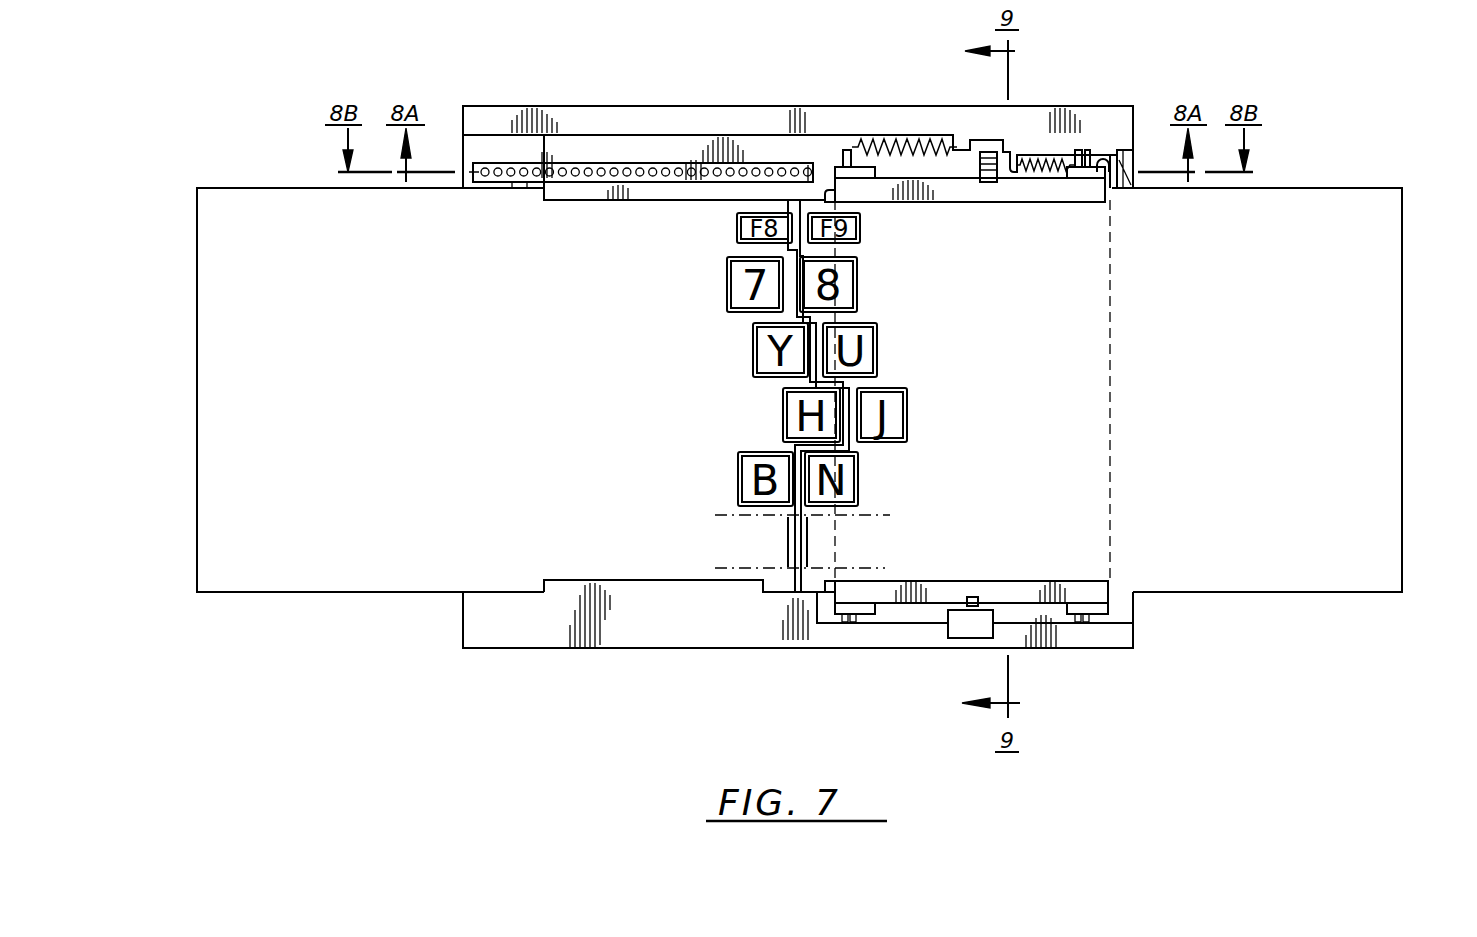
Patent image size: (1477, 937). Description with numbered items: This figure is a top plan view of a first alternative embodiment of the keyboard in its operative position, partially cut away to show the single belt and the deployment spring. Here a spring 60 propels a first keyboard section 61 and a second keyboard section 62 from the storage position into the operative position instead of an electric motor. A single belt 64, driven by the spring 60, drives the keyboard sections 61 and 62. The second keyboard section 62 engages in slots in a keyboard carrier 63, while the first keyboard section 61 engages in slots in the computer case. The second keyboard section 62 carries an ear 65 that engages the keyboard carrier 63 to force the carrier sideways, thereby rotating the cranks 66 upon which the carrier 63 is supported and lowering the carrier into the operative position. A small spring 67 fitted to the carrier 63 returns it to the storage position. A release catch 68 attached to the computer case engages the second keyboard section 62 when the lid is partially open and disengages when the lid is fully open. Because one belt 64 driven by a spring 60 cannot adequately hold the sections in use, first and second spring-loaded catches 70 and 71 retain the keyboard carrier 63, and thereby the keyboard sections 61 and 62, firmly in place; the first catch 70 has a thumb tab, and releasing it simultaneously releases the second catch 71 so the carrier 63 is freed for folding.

The spring 60 is at (907, 147).
The first keyboard section 61 is at (215, 403).
The second keyboard section 62 is at (1395, 402).
The keyboard carrier 63 is at (1013, 588).
The single belt 64 is at (623, 172).
The ear 65 is at (831, 192).
The cranks 66 is at (862, 612).
The small spring 67 is at (1044, 165).
The release catch 68 is at (1124, 172).
The first spring-loaded catch 70 is at (962, 632).
The second spring-loaded catch 71 is at (993, 172).